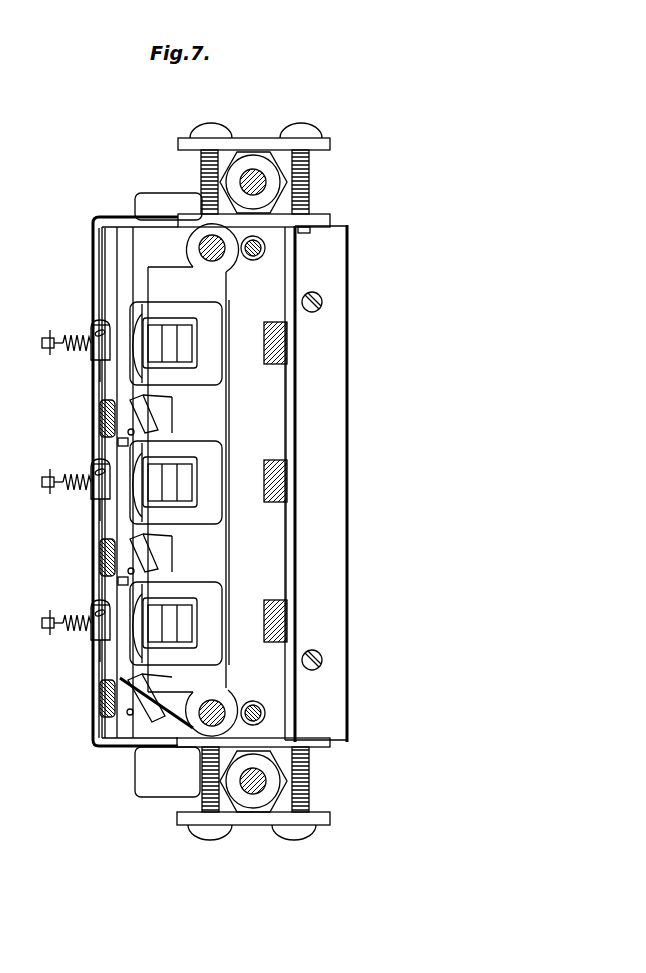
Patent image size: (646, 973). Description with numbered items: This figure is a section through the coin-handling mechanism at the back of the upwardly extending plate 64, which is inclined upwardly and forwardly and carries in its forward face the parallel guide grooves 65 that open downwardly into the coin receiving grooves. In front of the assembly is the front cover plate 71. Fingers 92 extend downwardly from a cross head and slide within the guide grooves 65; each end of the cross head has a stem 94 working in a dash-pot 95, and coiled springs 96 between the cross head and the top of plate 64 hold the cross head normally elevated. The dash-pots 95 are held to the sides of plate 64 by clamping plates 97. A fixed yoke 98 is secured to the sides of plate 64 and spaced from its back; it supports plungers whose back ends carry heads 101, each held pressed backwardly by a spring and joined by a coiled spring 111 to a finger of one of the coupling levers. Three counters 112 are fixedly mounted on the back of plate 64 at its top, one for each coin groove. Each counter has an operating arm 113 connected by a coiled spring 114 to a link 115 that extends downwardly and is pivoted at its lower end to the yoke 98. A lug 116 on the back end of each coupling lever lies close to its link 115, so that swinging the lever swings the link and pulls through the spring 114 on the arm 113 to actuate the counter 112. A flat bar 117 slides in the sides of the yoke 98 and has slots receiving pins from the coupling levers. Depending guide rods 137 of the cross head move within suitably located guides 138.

The plate 64 is at (268, 421).
The guide grooves 65 is at (276, 366).
The front cover plate 71 is at (297, 440).
The fingers 92 is at (288, 349).
The stem 94 is at (251, 170).
The dash-pot 95 is at (282, 158).
The coiled springs 96 is at (255, 262).
The clamping plates 97 is at (331, 144).
The fixed yoke 98 is at (107, 745).
The head 101 is at (50, 332).
The coiled spring 111 is at (78, 360).
The counter 112 is at (176, 382).
The operating arm 113 is at (108, 386).
The coiled spring 114 is at (100, 420).
The link 115 is at (120, 434).
The lug 116 is at (120, 445).
The flat bar 117 is at (152, 200).
The guide rods 137 is at (204, 263).
The guides 138 is at (198, 248).